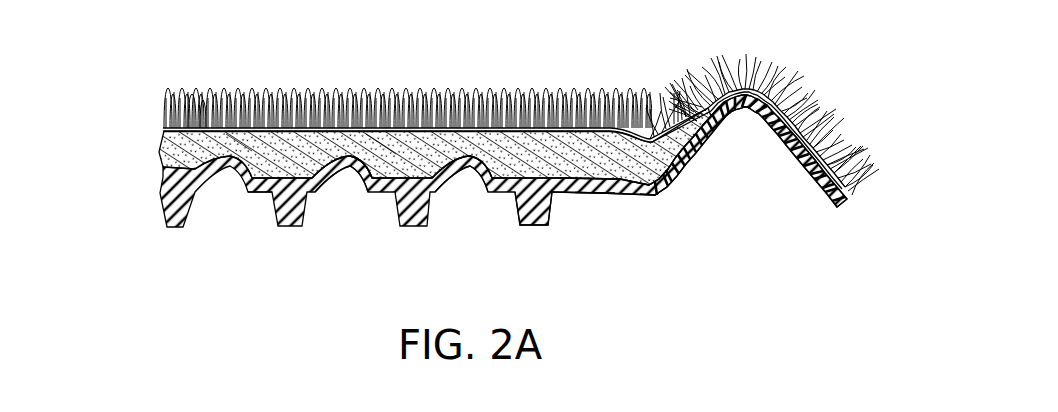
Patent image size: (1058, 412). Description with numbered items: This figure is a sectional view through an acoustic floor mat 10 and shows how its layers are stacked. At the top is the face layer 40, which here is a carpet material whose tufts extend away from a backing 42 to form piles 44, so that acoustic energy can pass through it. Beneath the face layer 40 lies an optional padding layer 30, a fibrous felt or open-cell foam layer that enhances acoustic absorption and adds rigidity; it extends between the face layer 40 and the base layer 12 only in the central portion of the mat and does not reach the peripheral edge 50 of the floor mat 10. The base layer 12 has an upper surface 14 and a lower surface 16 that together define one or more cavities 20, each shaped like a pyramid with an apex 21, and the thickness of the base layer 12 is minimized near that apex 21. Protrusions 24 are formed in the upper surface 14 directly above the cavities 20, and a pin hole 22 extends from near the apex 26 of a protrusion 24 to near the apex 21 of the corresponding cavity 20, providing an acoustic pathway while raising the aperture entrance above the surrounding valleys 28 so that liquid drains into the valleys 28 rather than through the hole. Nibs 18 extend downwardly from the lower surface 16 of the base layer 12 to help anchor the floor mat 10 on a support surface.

The acoustic floor mat 10 is at (146, 221).
The base layer 12 is at (626, 206).
The upper surface 14 is at (662, 193).
The lower surface 16 is at (598, 192).
The nib 18 is at (530, 227).
The cavity 20 is at (479, 178).
The apex 21 is at (353, 162).
The pin hole 22 is at (351, 155).
The protrusion 24 is at (378, 150).
The apex 26 is at (238, 152).
The valley 28 is at (256, 191).
The padding layer 30 is at (148, 154).
The face layer 40 is at (155, 95).
The backing 42 is at (203, 127).
The piles 44 is at (193, 91).
The peripheral edge 50 is at (753, 162).